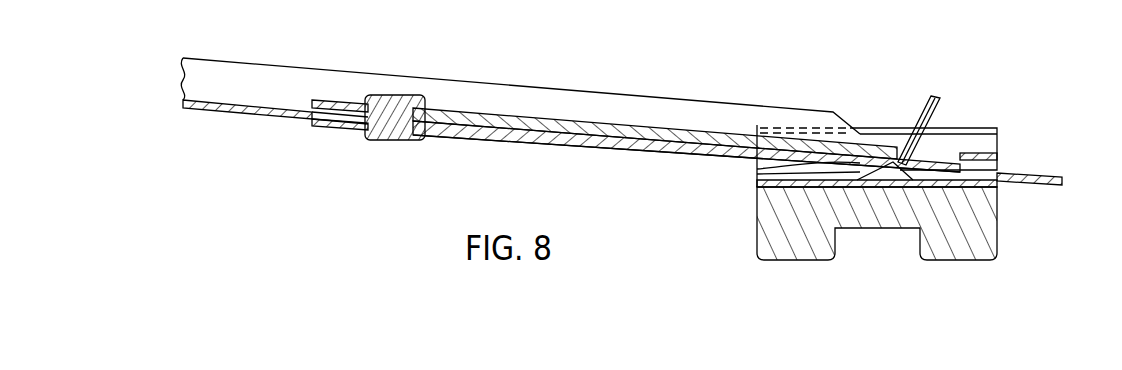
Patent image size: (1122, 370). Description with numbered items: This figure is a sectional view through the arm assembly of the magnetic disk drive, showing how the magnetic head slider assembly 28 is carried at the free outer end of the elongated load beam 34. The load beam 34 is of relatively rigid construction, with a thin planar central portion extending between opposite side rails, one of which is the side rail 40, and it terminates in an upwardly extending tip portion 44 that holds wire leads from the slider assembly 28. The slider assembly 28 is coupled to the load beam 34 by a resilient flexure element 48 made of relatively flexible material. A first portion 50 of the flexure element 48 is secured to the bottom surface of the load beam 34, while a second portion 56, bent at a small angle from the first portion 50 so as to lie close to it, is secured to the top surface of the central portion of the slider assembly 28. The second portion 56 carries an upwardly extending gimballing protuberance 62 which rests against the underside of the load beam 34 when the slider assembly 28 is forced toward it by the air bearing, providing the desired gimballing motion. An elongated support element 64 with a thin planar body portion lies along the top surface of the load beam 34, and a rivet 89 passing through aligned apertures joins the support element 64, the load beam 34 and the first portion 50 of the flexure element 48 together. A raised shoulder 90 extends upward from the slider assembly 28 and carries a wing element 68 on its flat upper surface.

The magnetic head slider assembly 28 is at (757, 243).
The load beam 34 is at (266, 112).
The side rail 40 is at (555, 88).
The tip portion 44 is at (940, 107).
The resilient flexure element 48 is at (514, 143).
The first portion of the flexure element 50 is at (669, 153).
The second portion of the flexure element 56 is at (757, 185).
The gimballing protuberance 62 is at (757, 176).
The elongated support element 64 is at (668, 128).
The wing element 68 is at (986, 128).
The rivet 89 is at (400, 141).
The raised shoulder 90 is at (988, 147).